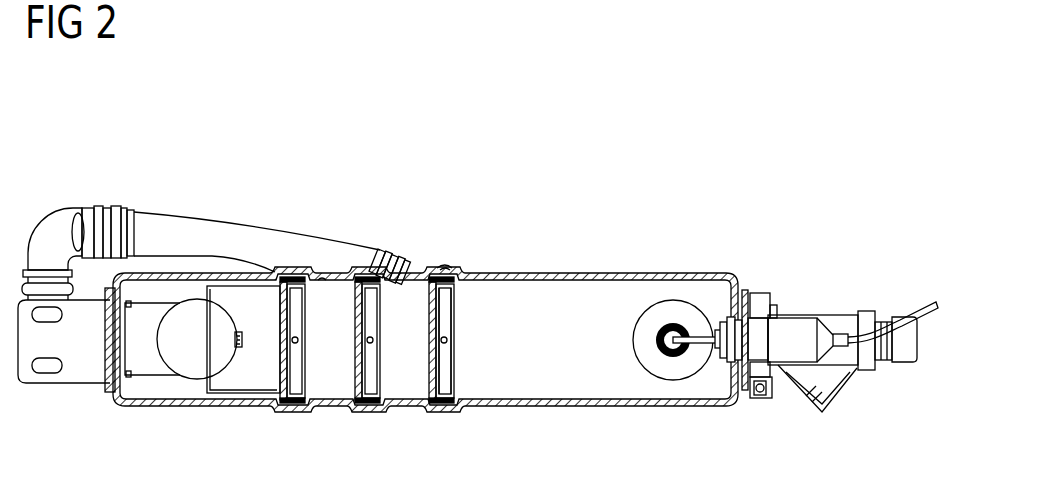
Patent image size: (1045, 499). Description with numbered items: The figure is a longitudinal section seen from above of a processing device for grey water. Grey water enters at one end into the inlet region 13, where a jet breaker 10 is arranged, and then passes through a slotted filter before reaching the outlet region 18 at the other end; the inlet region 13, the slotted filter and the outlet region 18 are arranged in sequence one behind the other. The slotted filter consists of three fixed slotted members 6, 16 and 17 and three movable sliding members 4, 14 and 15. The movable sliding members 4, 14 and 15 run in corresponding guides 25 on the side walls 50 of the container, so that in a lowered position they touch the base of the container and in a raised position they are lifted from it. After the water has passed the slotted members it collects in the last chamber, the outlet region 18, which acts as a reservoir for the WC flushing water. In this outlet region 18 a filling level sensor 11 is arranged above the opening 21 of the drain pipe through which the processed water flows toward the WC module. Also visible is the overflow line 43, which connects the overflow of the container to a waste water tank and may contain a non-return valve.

The movable sliding member 4 is at (442, 317).
The fixed slotted member 6 is at (435, 357).
The jet breaker 10 is at (173, 353).
The filling level sensor 11 is at (798, 333).
The inlet region 13 is at (248, 303).
The movable sliding member 14 is at (385, 355).
The movable sliding member 15 is at (295, 373).
The fixed slotted member 16 is at (363, 355).
The fixed slotted member 17 is at (273, 358).
The outlet region 18 is at (570, 310).
The opening of the drain pipe 21 is at (670, 320).
The guides 25 is at (317, 283).
The overflow line 43 is at (166, 212).
The side walls 50 is at (625, 272).